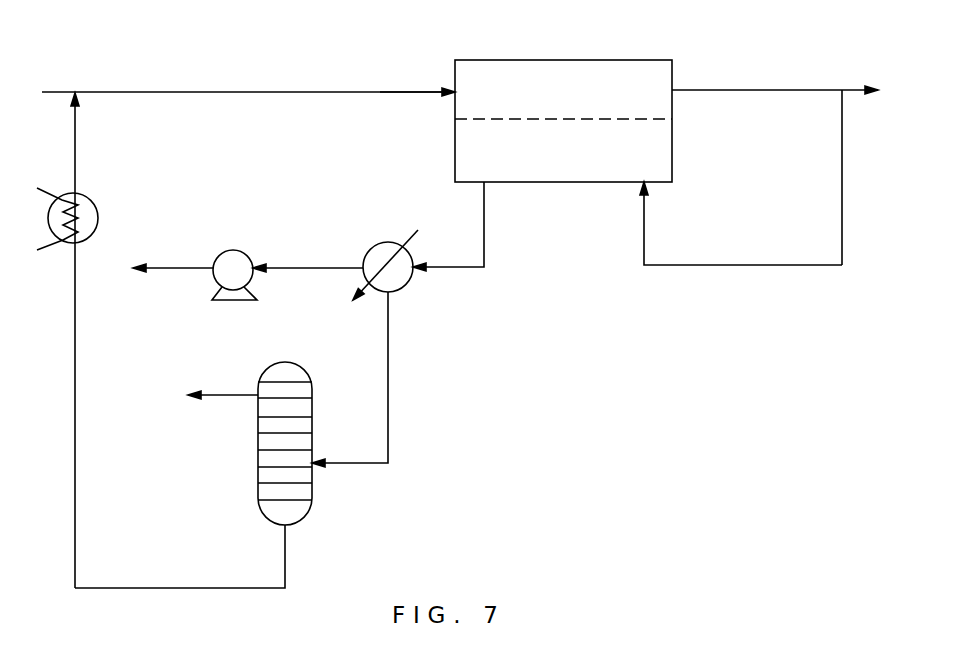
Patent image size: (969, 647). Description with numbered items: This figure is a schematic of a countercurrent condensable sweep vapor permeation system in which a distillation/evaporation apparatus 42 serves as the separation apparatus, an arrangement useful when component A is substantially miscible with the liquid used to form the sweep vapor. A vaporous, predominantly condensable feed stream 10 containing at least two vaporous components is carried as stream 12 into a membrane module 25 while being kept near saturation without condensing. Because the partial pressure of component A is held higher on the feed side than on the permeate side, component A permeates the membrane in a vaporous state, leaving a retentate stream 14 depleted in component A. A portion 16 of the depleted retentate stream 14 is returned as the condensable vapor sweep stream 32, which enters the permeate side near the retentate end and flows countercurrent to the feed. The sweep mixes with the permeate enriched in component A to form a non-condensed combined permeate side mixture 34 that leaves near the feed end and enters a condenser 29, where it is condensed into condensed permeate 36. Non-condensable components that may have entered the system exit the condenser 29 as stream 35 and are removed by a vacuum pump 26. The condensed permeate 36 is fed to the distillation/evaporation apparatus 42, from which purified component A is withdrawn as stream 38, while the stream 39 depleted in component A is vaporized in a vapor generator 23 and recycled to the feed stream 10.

The feed stream 10 is at (248, 327).
The heated feed stream 12 is at (417, 81).
The retentate stream 14 is at (775, 78).
The portion of depleted retentate stream 16 is at (825, 177).
The vapor generator 23 is at (93, 198).
The membrane module 25 is at (568, 60).
The vacuum pump 26 is at (230, 249).
The condenser 29 is at (405, 290).
The condensable vapor sweep stream 32 is at (741, 223).
The combined permeate side mixture 34 is at (448, 226).
The stream of non-condensable components 35 is at (308, 254).
The condensed permeate 36 is at (350, 379).
The stream enriched in component A 38 is at (175, 383).
The stream depleted in component A 39 is at (180, 556).
The distillation/evaporation apparatus 42 is at (287, 362).